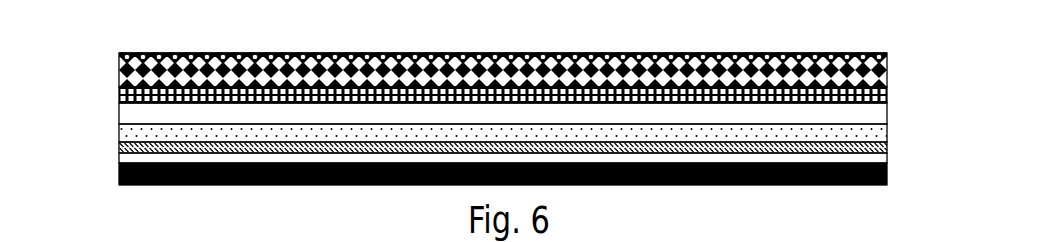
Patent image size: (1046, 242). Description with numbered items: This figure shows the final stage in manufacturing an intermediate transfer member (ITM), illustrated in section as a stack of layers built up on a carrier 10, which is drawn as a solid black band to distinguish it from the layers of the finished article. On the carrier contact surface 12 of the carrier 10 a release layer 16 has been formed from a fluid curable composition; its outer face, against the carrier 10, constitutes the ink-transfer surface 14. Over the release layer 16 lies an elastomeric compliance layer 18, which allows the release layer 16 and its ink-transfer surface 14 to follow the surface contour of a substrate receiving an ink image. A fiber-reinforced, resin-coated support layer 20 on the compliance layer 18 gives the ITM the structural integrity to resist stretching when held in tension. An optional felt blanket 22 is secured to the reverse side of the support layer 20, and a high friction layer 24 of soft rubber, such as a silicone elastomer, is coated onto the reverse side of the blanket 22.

The carrier 10 is at (803, 185).
The carrier contact surface 12 is at (119, 158).
The ink-transfer surface 14 is at (889, 146).
The release layer 16 is at (120, 133).
The compliance layer 18 is at (889, 112).
The support layer 20 is at (119, 92).
The felt blanket 22 is at (889, 72).
The high friction layer 24 is at (257, 53).